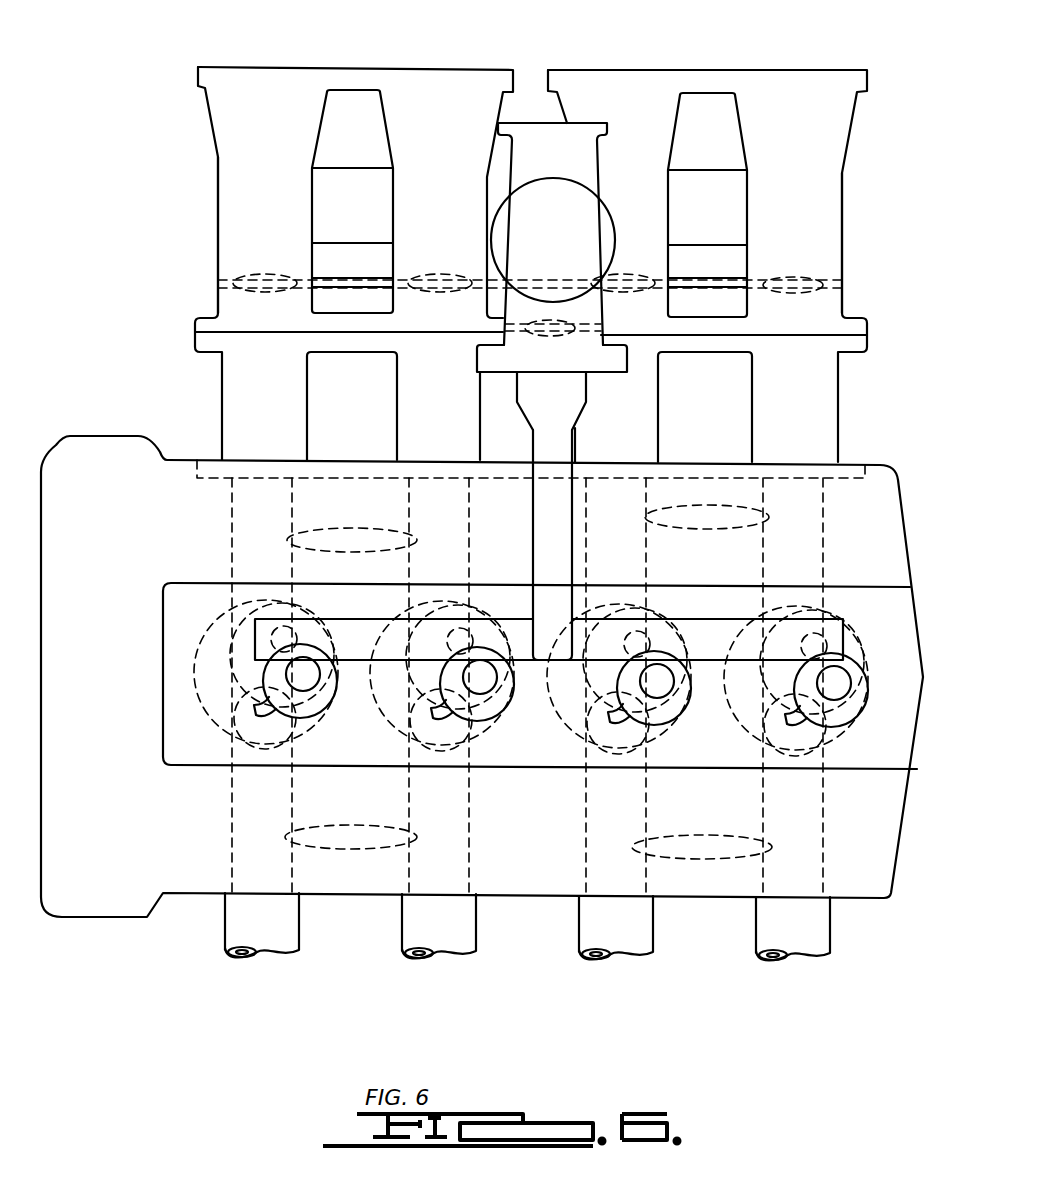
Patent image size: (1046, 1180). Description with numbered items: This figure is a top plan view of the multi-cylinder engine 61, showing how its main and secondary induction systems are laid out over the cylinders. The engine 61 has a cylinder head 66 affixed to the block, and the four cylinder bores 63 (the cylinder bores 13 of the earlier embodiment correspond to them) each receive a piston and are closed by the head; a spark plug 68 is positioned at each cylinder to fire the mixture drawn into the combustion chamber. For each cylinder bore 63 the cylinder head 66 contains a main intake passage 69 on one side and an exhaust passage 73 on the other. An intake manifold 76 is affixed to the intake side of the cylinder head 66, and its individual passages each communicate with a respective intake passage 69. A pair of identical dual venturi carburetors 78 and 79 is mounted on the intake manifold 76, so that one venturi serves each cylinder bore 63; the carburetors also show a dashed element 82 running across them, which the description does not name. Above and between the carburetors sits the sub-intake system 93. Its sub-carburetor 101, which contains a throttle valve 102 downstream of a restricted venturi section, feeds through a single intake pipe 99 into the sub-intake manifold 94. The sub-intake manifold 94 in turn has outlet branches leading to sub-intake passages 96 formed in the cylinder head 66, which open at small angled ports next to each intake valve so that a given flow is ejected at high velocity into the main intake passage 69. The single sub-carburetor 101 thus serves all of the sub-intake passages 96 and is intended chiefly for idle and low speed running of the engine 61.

The cylinder bore 13 is at (483, 77).
The multi-cylinder engine 61 is at (244, 974).
The cylinder bore 63 is at (310, 727).
The cylinder head 66 is at (897, 732).
The spark plug 68 is at (330, 665).
The intake passage 69 is at (528, 527).
The exhaust passage 73 is at (528, 842).
The intake manifold 76 is at (297, 425).
The carburetor 78 is at (218, 248).
The carburetor 79 is at (838, 196).
The throttle shaft passage 82 is at (300, 256).
The sub-intake system 93 is at (588, 438).
The sub-intake manifold 94 is at (695, 628).
The sub-intake passage 96 is at (303, 613).
The intake pipe 99 is at (560, 502).
The sub-carburetor 101 is at (598, 200).
The throttle valve 102 is at (535, 331).